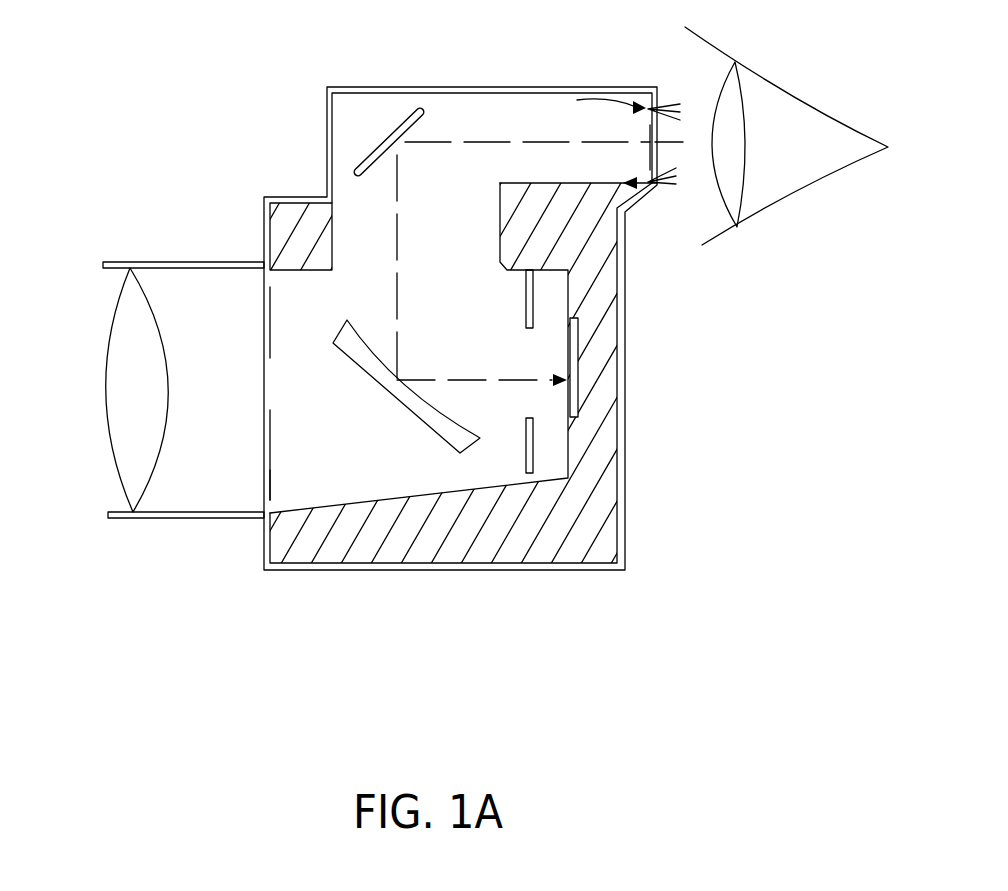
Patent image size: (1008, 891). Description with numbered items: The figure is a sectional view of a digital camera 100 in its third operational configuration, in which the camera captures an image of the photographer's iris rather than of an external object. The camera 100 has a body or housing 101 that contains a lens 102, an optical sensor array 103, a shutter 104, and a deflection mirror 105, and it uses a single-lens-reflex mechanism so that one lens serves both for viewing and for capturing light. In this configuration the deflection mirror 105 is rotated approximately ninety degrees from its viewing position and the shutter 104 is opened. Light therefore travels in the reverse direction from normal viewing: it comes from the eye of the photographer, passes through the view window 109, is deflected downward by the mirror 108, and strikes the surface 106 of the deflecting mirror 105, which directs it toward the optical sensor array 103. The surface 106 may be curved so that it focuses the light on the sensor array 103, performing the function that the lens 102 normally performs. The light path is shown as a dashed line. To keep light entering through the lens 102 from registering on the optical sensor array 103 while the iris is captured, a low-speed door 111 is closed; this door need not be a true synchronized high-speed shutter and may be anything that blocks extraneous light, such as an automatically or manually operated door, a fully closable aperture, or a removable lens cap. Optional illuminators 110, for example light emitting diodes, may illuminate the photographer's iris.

The camera 100 is at (258, 103).
The housing 101 is at (628, 486).
The lens 102 is at (110, 440).
The optical sensor array 103 is at (580, 363).
The shutter 104 is at (535, 461).
The deflection mirror 105 is at (465, 451).
The surface 106 is at (426, 400).
The mirror 108 is at (393, 128).
The view window 109 is at (663, 140).
The illuminators 110 is at (626, 178).
The low-speed door 111 is at (266, 482).